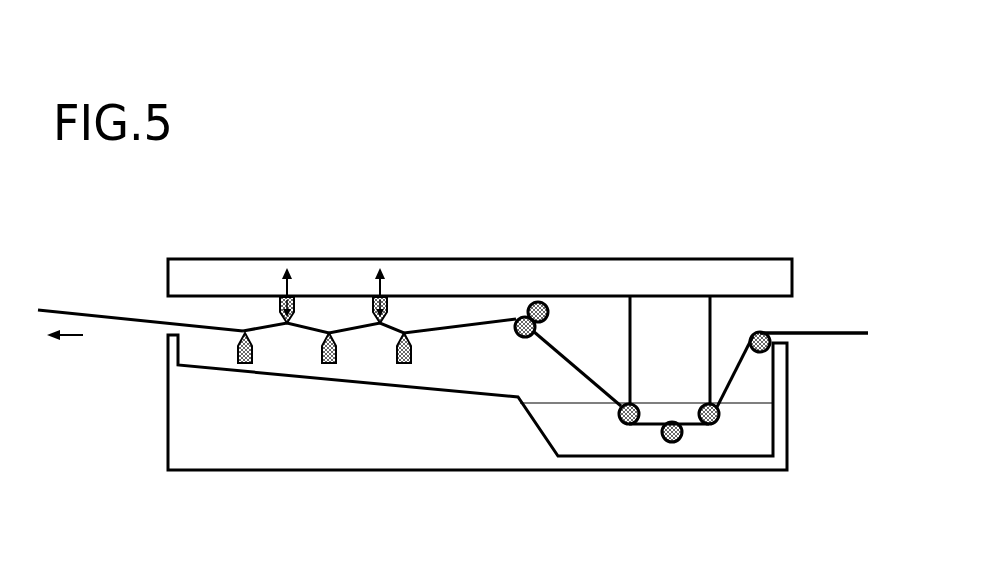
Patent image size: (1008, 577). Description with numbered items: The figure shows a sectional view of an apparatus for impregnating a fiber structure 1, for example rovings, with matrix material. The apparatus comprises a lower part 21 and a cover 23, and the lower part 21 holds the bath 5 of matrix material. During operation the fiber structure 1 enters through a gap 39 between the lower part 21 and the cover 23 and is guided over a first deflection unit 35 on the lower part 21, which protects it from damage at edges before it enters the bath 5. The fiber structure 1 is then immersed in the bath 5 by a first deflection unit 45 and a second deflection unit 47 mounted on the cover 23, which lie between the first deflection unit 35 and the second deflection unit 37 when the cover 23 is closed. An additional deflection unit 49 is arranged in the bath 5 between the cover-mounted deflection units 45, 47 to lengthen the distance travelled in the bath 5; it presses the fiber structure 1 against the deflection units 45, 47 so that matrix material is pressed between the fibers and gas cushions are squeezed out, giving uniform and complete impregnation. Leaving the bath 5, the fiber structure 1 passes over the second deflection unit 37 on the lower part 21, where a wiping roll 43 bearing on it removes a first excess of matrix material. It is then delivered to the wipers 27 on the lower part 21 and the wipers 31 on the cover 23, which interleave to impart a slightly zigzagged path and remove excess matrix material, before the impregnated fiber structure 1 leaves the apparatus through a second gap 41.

The fiber structure 1 is at (852, 324).
The bath 5 is at (578, 445).
The lower part 21 is at (427, 453).
The cover 23 is at (737, 270).
The wipers 27 is at (329, 368).
The wipers 31 is at (292, 306).
The first deflection unit 35 is at (766, 349).
The second deflection unit 37 is at (519, 311).
The gap 39 is at (782, 313).
The second gap 41 is at (172, 308).
The wiping roll 43 is at (548, 300).
The first deflection unit mounted on the cover 45 is at (713, 424).
The second deflection unit mounted on the cover 47 is at (629, 426).
The additional deflection unit 49 is at (672, 442).